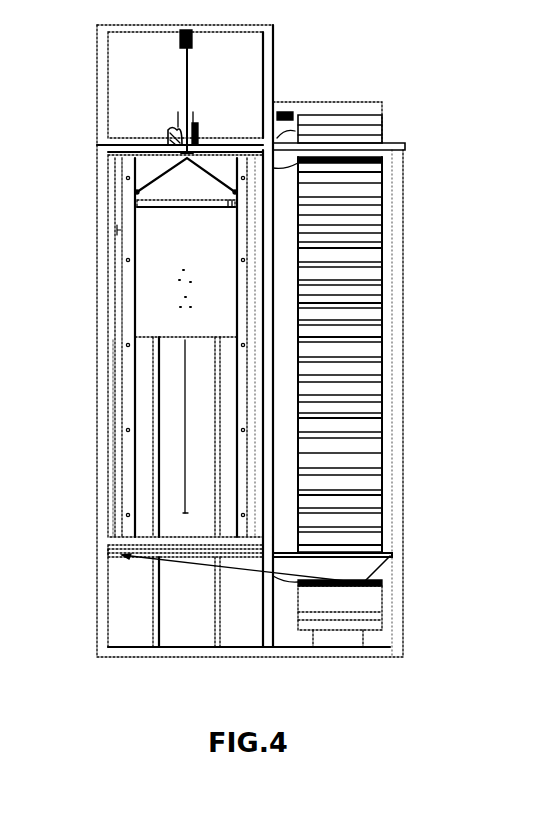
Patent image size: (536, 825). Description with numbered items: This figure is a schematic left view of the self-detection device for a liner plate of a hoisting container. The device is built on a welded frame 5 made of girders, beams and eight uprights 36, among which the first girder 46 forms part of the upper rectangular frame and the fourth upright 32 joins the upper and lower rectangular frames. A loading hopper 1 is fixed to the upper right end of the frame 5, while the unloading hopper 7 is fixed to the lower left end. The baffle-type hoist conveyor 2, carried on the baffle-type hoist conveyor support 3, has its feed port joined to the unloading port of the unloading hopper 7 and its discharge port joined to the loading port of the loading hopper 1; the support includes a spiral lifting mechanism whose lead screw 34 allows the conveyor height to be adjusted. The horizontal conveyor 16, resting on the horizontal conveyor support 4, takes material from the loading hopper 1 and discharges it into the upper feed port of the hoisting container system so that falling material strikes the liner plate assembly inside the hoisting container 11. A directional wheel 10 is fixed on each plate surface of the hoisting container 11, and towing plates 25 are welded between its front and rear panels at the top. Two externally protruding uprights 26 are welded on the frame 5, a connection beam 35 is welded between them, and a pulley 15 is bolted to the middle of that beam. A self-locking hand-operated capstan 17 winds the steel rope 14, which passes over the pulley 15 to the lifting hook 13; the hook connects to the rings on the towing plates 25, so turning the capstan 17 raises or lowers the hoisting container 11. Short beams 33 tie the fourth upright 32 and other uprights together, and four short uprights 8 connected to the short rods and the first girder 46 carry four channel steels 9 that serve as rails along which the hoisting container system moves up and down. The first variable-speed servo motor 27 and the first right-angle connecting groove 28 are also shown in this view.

The loading hopper 1 is at (152, 163).
The baffle-type hoist conveyor 2 is at (360, 225).
The baffle-type hoist conveyor support 3 is at (367, 633).
The horizontal conveyor support 4 is at (152, 447).
The frame 5 is at (397, 648).
The unloading hopper 7 is at (168, 562).
The short upright 8 is at (123, 508).
The channel steel 9 is at (113, 420).
The directional wheel 10 is at (115, 332).
The hoisting container 11 is at (145, 285).
The lifting hook 13 is at (153, 175).
The steel rope 14 is at (177, 78).
The pulley 15 is at (170, 45).
The horizontal conveyor 16 is at (183, 208).
The hand-operated capstan 17 is at (173, 130).
The towing plate 25 is at (143, 200).
The externally protruding upright 26 is at (101, 120).
The first variable-speed servo motor 27 is at (287, 122).
The first right-angle connecting groove 28 is at (92, 147).
The fourth upright 32 is at (105, 628).
The short beam 33 is at (150, 543).
The lead screw 34 is at (185, 358).
The connection beam 35 is at (148, 30).
The upright 36 is at (268, 632).
The first girder 46 is at (110, 230).